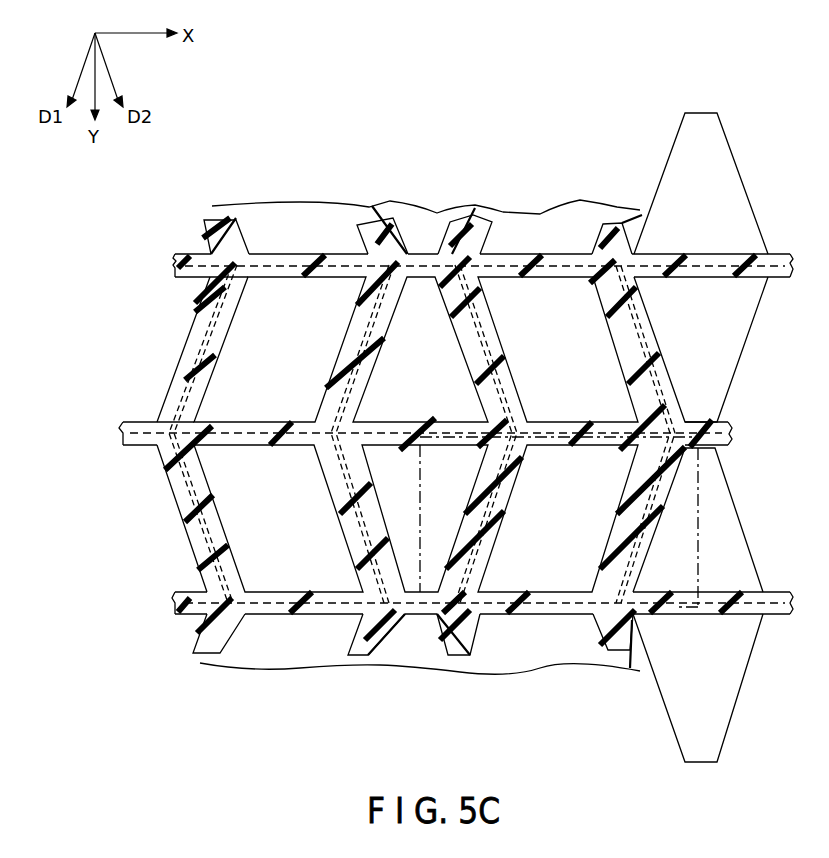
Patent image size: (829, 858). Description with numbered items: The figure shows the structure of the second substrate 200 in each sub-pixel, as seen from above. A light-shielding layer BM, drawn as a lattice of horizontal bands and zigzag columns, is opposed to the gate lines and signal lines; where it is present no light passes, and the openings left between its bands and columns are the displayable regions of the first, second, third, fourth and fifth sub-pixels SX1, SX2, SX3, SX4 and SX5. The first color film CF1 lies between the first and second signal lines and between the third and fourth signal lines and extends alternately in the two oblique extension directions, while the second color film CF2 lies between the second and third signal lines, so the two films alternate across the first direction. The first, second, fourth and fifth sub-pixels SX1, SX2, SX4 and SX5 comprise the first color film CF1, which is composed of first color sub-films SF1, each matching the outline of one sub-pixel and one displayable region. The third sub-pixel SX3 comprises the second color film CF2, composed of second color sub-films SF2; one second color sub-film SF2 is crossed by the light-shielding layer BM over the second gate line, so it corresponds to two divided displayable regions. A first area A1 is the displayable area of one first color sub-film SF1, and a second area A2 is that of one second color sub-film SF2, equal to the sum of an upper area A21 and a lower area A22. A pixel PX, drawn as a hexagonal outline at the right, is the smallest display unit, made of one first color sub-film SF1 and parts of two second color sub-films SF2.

The second substrate 200 is at (648, 70).
The light-shielding layer BM is at (183, 256).
The pixel PX is at (675, 608).
The first sub-pixel SX1 is at (280, 349).
The second sub-pixel SX2 is at (558, 349).
The third sub-pixel SX3 is at (420, 349).
The fourth sub-pixel SX4 is at (278, 518).
The fifth sub-pixel SX5 is at (558, 518).
The first area A1 is at (273, 266).
The second area A2 is at (468, 716).
The area A21 is at (410, 603).
The area A22 is at (422, 603).
The first color sub-film SF1 is at (315, 266).
The second color sub-film SF2 is at (420, 266).
The first color film CF1 is at (233, 265).
The second color film CF2 is at (400, 204).